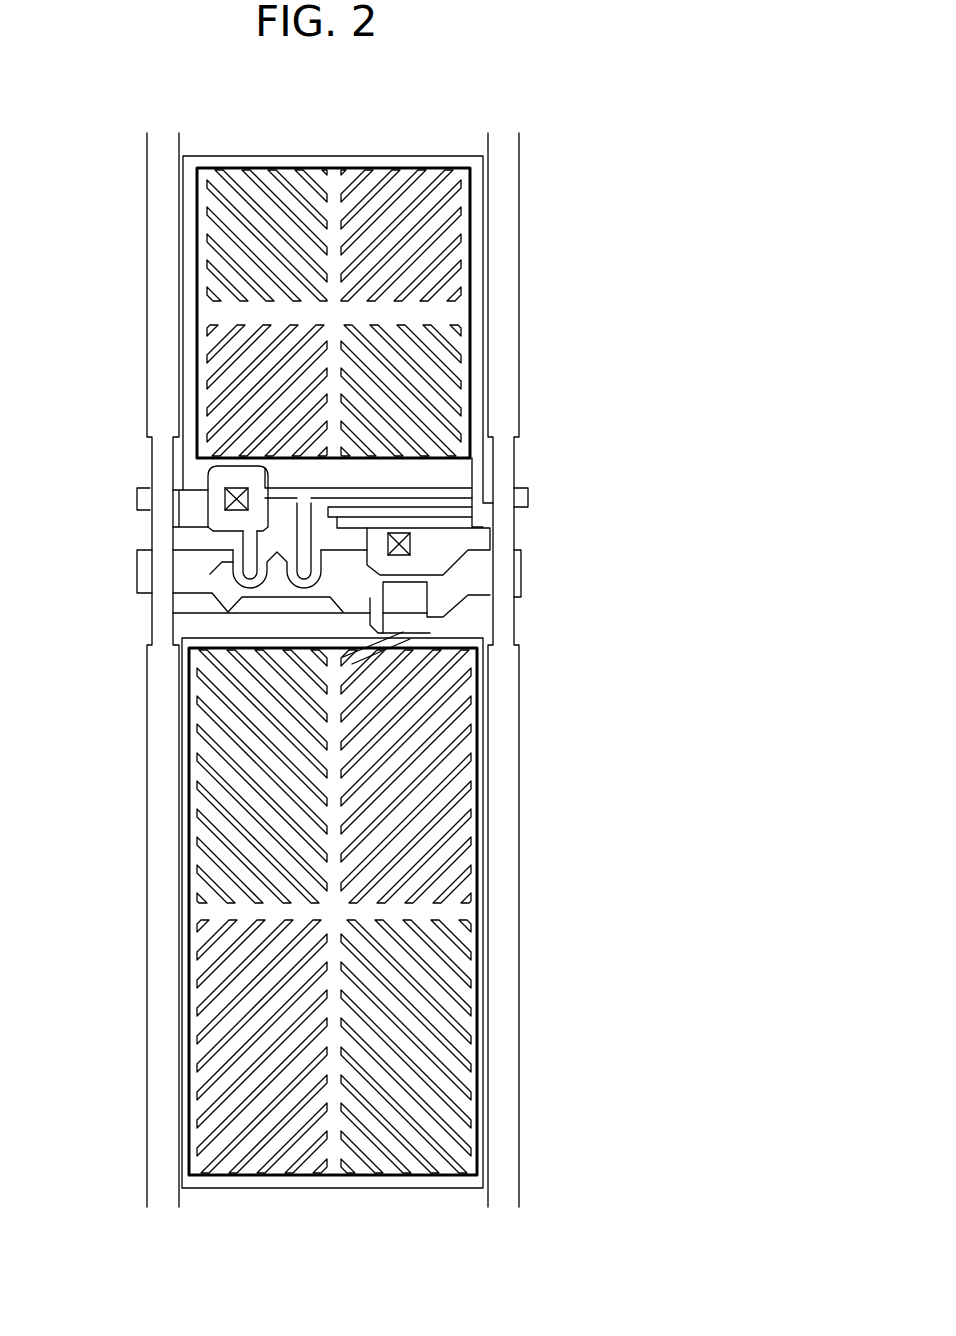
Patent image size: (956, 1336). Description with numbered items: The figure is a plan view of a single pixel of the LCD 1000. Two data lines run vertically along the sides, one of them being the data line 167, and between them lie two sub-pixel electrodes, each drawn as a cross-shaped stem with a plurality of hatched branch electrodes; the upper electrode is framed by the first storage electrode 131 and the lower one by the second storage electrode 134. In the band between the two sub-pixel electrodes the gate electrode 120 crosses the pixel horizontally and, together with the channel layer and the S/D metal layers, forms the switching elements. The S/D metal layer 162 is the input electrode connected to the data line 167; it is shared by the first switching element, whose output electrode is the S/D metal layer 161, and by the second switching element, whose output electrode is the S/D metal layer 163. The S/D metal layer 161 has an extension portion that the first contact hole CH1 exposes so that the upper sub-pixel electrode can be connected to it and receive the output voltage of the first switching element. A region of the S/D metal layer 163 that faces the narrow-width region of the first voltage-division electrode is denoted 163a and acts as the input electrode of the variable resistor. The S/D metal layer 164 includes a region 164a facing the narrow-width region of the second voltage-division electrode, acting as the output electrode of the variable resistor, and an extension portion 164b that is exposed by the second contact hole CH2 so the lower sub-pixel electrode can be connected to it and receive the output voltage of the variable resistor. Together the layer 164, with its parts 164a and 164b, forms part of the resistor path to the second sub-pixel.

The LCD 1000 is at (545, 115).
The gate electrode 120 is at (137, 577).
The first storage electrode 131 is at (398, 163).
The second storage electrode 134 is at (276, 1182).
The S/D metal layer 161 is at (232, 513).
The S/D metal layer 162 is at (300, 600).
The S/D metal layer 163 is at (398, 495).
The region of S/D metal layer 163 163a is at (455, 492).
The S/D metal layer 164 is at (520, 593).
The region of S/D metal layer 164 164a is at (450, 523).
The extension portion 164b is at (415, 563).
The data line 167 is at (162, 1190).
The first contact hole CH1 is at (235, 500).
The second contact hole CH2 is at (400, 556).